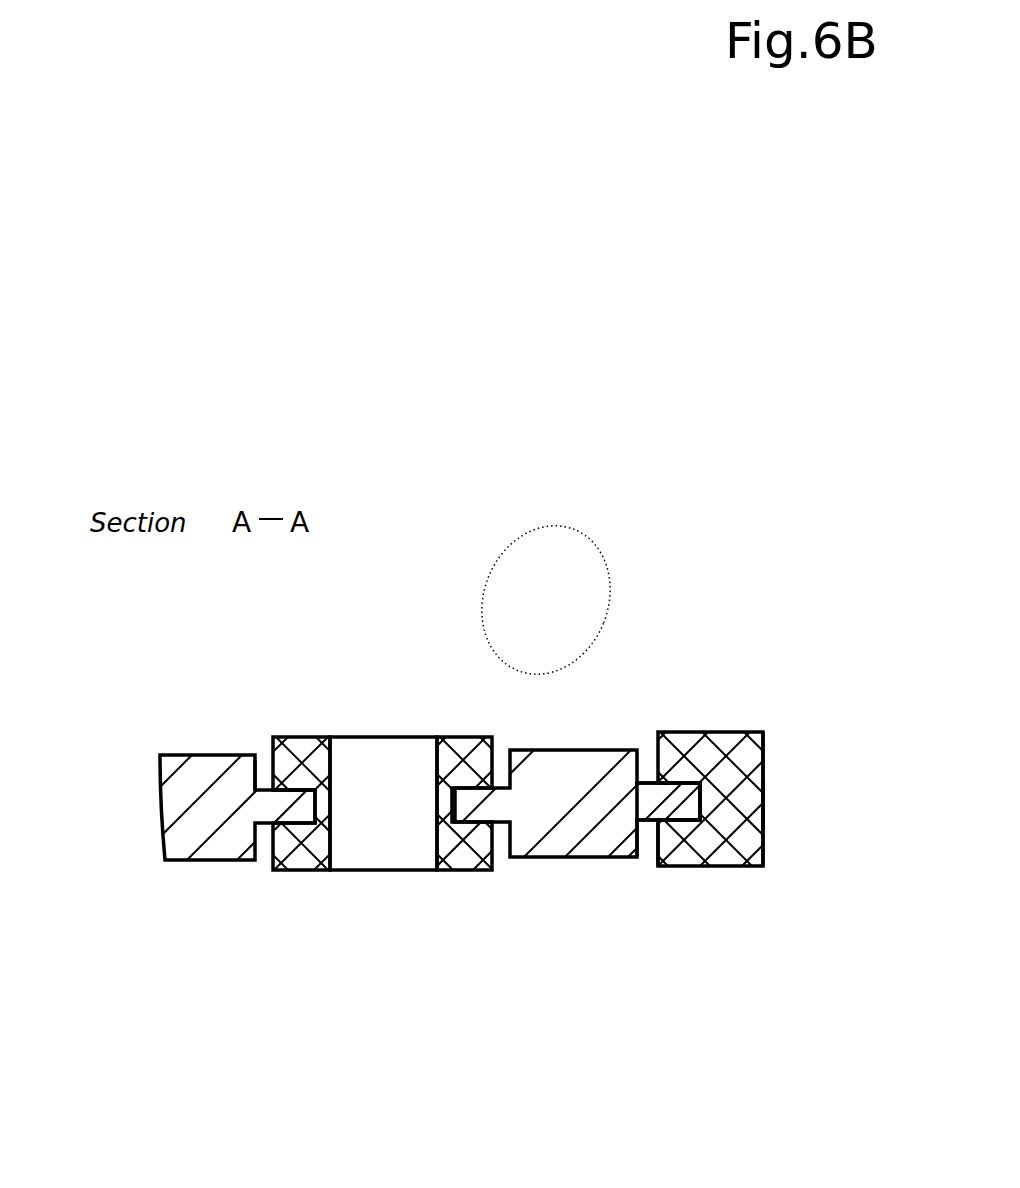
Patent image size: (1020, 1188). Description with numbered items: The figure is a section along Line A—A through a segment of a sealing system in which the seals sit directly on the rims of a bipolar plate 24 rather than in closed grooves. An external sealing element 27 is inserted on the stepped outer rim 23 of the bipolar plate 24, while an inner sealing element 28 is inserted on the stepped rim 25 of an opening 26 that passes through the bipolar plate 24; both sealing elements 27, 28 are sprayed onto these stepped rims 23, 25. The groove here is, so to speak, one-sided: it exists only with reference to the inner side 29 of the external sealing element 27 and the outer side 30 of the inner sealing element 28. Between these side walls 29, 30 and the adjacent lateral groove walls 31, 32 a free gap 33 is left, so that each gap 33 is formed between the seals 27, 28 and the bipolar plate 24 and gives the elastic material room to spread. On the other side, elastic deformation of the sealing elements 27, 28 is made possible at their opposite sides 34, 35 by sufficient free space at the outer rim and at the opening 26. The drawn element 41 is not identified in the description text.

The outer rim 23 is at (763, 738).
The bipolar plate 24 is at (557, 795).
The rim of opening 25 is at (297, 757).
The opening 26 is at (253, 898).
The external sealing element 27 is at (723, 868).
The inner sealing element 28 is at (301, 866).
The inner side of external sealing element 29 is at (658, 825).
The outer side of inner sealing element 30 is at (492, 866).
The lateral groove wall 31 is at (253, 773).
The lateral groove wall 32 is at (515, 750).
The free gap 33 is at (263, 748).
The opposite side of external sealing element 34 is at (765, 803).
The opposite side of inner sealing element 35 is at (435, 866).
The projection 41 is at (657, 780).